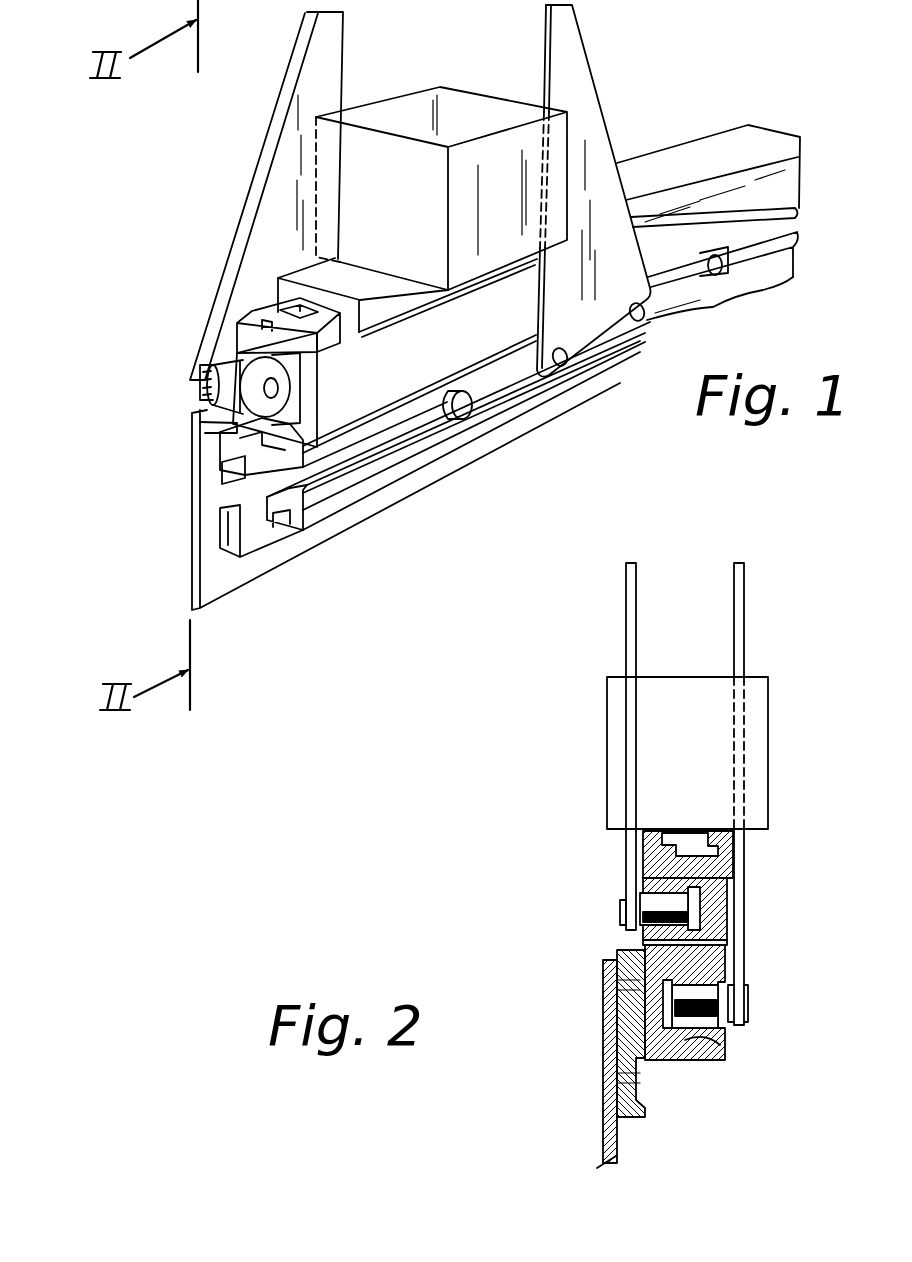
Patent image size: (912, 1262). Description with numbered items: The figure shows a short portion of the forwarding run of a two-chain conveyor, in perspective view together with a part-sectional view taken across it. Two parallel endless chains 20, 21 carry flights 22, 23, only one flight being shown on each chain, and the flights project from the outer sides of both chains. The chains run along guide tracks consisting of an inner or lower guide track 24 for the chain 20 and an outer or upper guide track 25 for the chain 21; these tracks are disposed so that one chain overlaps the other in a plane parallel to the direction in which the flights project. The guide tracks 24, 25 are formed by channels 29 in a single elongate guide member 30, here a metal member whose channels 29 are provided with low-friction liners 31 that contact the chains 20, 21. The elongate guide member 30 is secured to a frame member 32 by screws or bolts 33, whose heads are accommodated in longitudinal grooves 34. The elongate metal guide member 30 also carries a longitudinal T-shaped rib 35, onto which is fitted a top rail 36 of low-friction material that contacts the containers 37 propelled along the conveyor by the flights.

In FIG. 1, the endless chain 20 is at (505, 380).
In FIG. 2, the endless chain 20 is at (700, 995).
In FIG. 1, the endless chain 21 is at (222, 380).
In FIG. 2, the endless chain 21 is at (653, 900).
In FIG. 1, the flight 22 is at (571, 62).
In FIG. 2, the flight 22 is at (740, 593).
In FIG. 1, the flight 23 is at (278, 160).
In FIG. 2, the flight 23 is at (628, 605).
In FIG. 1, the inner (or lower) guide track 24 is at (372, 456).
In FIG. 2, the inner (or lower) guide track 24 is at (713, 1018).
In FIG. 1, the outer (or upper) guide track 25 is at (283, 381).
In FIG. 2, the outer (or upper) guide track 25 is at (643, 927).
In FIG. 1, the channel 29 is at (296, 365).
In FIG. 2, the channel 29 is at (687, 877).
In FIG. 1, the elongate guide member 30 is at (217, 423).
In FIG. 1, the low-friction liner 31 is at (290, 420).
In FIG. 2, the low-friction liner 31 is at (693, 938).
In FIG. 1, the frame member 32 is at (195, 585).
In FIG. 2, the frame member 32 is at (607, 1137).
In FIG. 2, the screw or bolt 33 is at (618, 985).
In FIG. 1, the longitudinal groove 34 is at (229, 464).
In FIG. 2, the longitudinal groove 34 is at (640, 1002).
In FIG. 1, the T-shaped rib 35 is at (303, 312).
In FIG. 2, the T-shaped rib 35 is at (688, 843).
In FIG. 1, the top rail 36 is at (323, 277).
In FIG. 2, the top rail 36 is at (643, 848).
In FIG. 1, the container 37 is at (412, 90).
In FIG. 2, the container 37 is at (607, 748).